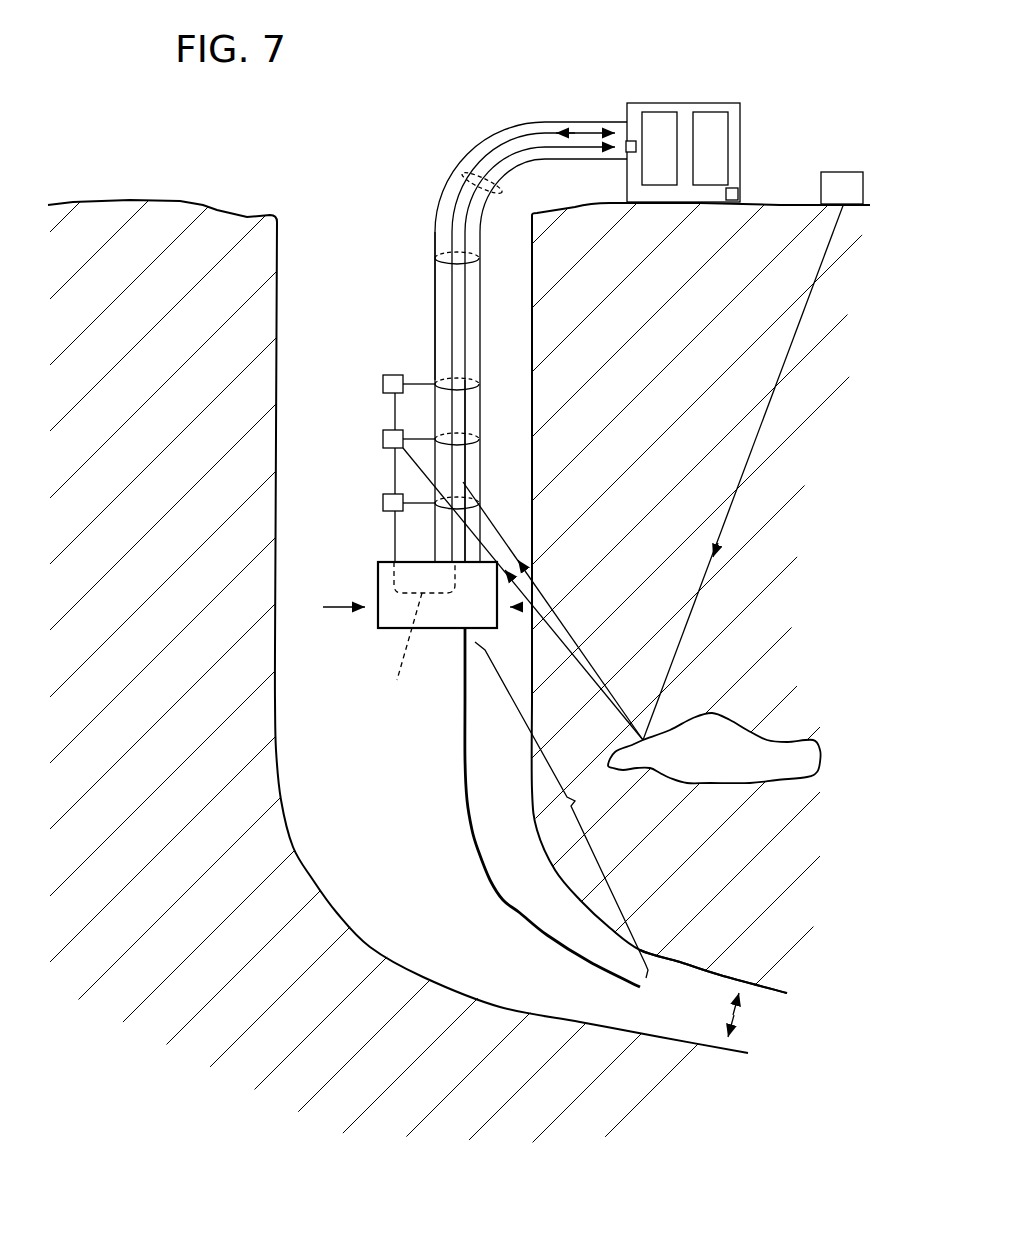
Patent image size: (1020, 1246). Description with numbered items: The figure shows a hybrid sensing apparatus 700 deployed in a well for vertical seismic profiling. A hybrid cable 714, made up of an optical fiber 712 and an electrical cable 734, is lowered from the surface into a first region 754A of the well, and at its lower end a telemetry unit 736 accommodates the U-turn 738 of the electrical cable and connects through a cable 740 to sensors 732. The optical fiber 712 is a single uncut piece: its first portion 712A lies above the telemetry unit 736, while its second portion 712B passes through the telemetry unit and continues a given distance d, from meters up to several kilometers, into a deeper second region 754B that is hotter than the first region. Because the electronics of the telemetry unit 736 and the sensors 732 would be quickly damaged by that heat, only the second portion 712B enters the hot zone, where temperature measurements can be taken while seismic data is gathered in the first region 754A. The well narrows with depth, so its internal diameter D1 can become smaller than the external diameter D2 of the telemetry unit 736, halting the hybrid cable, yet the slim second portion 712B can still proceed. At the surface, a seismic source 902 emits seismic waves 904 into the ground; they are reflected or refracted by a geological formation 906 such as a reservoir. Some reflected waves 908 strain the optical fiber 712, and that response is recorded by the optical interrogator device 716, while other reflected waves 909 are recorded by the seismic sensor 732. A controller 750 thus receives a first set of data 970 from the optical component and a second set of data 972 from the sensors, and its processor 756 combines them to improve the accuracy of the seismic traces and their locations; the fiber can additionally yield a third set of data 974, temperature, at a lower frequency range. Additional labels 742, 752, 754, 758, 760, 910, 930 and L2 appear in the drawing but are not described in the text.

The hybrid sensing apparatus 700 is at (455, 66).
The optical fiber 712 is at (461, 213).
The first portion of the optical fiber 712A is at (468, 468).
The second portion of the optical fiber 712B is at (478, 855).
The hybrid cable 714 is at (433, 292).
The optical interrogator device 716 is at (630, 140).
The sensors 732 is at (383, 503).
The electrical cable 734 is at (493, 157).
The telemetry unit 736 is at (437, 628).
The U-turn 738 is at (415, 631).
The cable 740 is at (395, 539).
The sensor 742 is at (422, 382).
The controller 750 is at (685, 103).
The surface 752 is at (125, 203).
The formation 754 is at (278, 375).
The first region of the well 754A is at (530, 395).
The second region of the well 754B is at (712, 977).
The processor 756 is at (660, 186).
The memory 758 is at (713, 186).
The interface 760 is at (733, 201).
The seismic source 902 is at (840, 172).
The seismic waves 904 is at (745, 470).
The geological formation 906 is at (770, 738).
The reflected waves 908 is at (500, 527).
The reflected waves 909 is at (413, 462).
The data signal 910 is at (545, 128).
The sensor assembly 930 is at (367, 662).
The first set of data 970 is at (590, 150).
The second set of data 972 is at (585, 131).
The third set of data 974 is at (505, 908).
The length L2 is at (350, 389).
The internal diameter of the well D1 is at (750, 1015).
The external diameter of the telemetry unit D2 is at (347, 603).
The given distance d is at (561, 810).